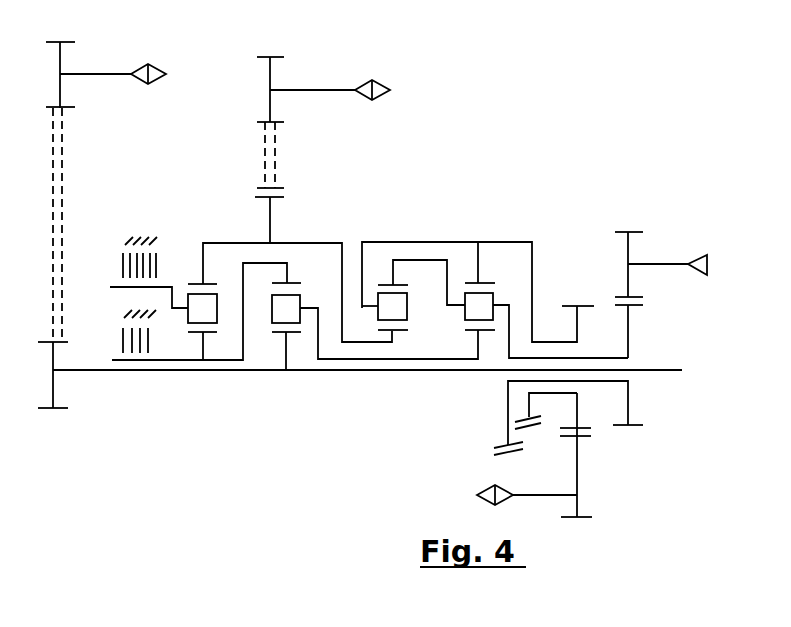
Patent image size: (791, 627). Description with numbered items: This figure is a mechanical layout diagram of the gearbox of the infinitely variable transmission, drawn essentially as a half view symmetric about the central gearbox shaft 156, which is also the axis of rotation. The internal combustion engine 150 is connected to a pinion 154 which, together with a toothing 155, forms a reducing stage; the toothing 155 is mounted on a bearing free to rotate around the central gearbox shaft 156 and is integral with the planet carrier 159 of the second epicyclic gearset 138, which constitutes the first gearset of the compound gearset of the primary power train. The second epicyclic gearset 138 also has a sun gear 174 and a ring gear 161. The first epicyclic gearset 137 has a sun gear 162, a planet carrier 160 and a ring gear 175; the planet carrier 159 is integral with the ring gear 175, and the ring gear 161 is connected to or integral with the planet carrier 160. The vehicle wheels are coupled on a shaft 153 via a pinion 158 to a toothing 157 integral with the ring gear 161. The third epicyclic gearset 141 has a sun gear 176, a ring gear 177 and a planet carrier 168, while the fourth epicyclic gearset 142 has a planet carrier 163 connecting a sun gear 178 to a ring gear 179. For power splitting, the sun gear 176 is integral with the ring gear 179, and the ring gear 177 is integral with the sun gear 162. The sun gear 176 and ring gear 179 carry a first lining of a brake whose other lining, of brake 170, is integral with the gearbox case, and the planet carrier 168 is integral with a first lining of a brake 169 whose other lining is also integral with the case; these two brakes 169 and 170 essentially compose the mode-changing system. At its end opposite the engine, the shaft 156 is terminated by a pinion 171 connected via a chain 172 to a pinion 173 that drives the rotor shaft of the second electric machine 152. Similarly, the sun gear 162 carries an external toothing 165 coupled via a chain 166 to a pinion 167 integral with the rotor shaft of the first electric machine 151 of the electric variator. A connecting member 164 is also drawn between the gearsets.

The internal combustion engine 150 is at (695, 252).
The first electric machine 151 is at (385, 83).
The second electric machine 152 is at (153, 66).
The shaft 153 is at (478, 495).
The pinion 154 is at (628, 232).
The toothing 155 is at (628, 323).
The central gearbox shaft 156 is at (652, 368).
The toothing 157 is at (590, 432).
The pinion 158 is at (577, 477).
The planet carrier 159 is at (492, 298).
The planet carrier 160 is at (405, 303).
The ring gear 161 is at (367, 241).
The sun gear 162 is at (333, 242).
The planet carrier 163 is at (300, 302).
The connecting member 164 is at (245, 342).
The external toothing 165 is at (258, 203).
The chain 166 is at (265, 150).
The pinion 167 is at (270, 73).
The planet carrier 168 is at (217, 310).
The brake 169 is at (120, 262).
The brake 170 is at (120, 343).
The pinion 171 is at (55, 408).
The chain 172 is at (62, 187).
The pinion 173 is at (67, 95).
The sun gear 174 is at (488, 333).
The ring gear 175 is at (383, 282).
The sun gear 176 is at (190, 333).
The ring gear 177 is at (197, 283).
The sun gear 178 is at (292, 333).
The ring gear 179 is at (280, 280).
The second epicyclic gearset 138 is at (93, 492).
The first epicyclic gearset 137 is at (93, 568).
The third epicyclic gearset 141 is at (273, 492).
The fourth epicyclic gearset 142 is at (273, 568).